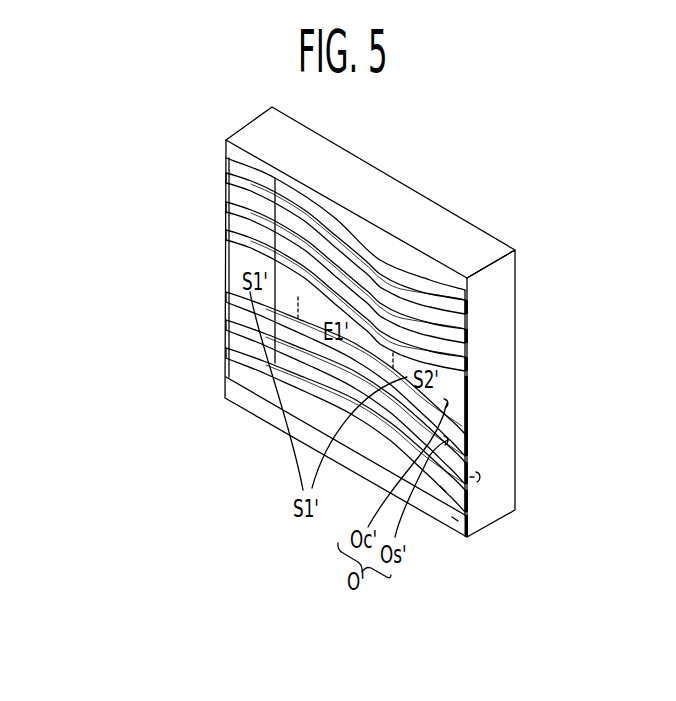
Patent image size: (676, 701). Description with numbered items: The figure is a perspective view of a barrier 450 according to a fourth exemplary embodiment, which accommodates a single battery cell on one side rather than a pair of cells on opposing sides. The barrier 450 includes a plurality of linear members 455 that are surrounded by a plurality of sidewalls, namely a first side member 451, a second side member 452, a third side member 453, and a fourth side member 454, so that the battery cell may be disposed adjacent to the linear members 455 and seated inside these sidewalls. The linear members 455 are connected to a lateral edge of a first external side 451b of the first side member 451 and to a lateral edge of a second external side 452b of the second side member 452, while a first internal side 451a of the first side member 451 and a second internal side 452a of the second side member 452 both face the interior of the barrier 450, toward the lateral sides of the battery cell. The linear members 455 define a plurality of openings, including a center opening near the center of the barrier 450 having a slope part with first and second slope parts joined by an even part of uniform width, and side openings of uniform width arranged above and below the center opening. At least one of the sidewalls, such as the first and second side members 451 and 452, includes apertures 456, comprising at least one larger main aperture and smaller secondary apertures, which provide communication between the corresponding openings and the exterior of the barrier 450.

The barrier 450 is at (529, 188).
The first side member 451 is at (130, 248).
The first internal side 451a is at (237, 257).
The first external side 451b is at (227, 293).
The second side member 452 is at (512, 624).
The second internal side 452a is at (442, 488).
The second external side 452b is at (452, 517).
The third side member 453 is at (367, 177).
The fourth side member 454 is at (272, 428).
The linear members 455 is at (277, 217).
The apertures 456 is at (468, 408).